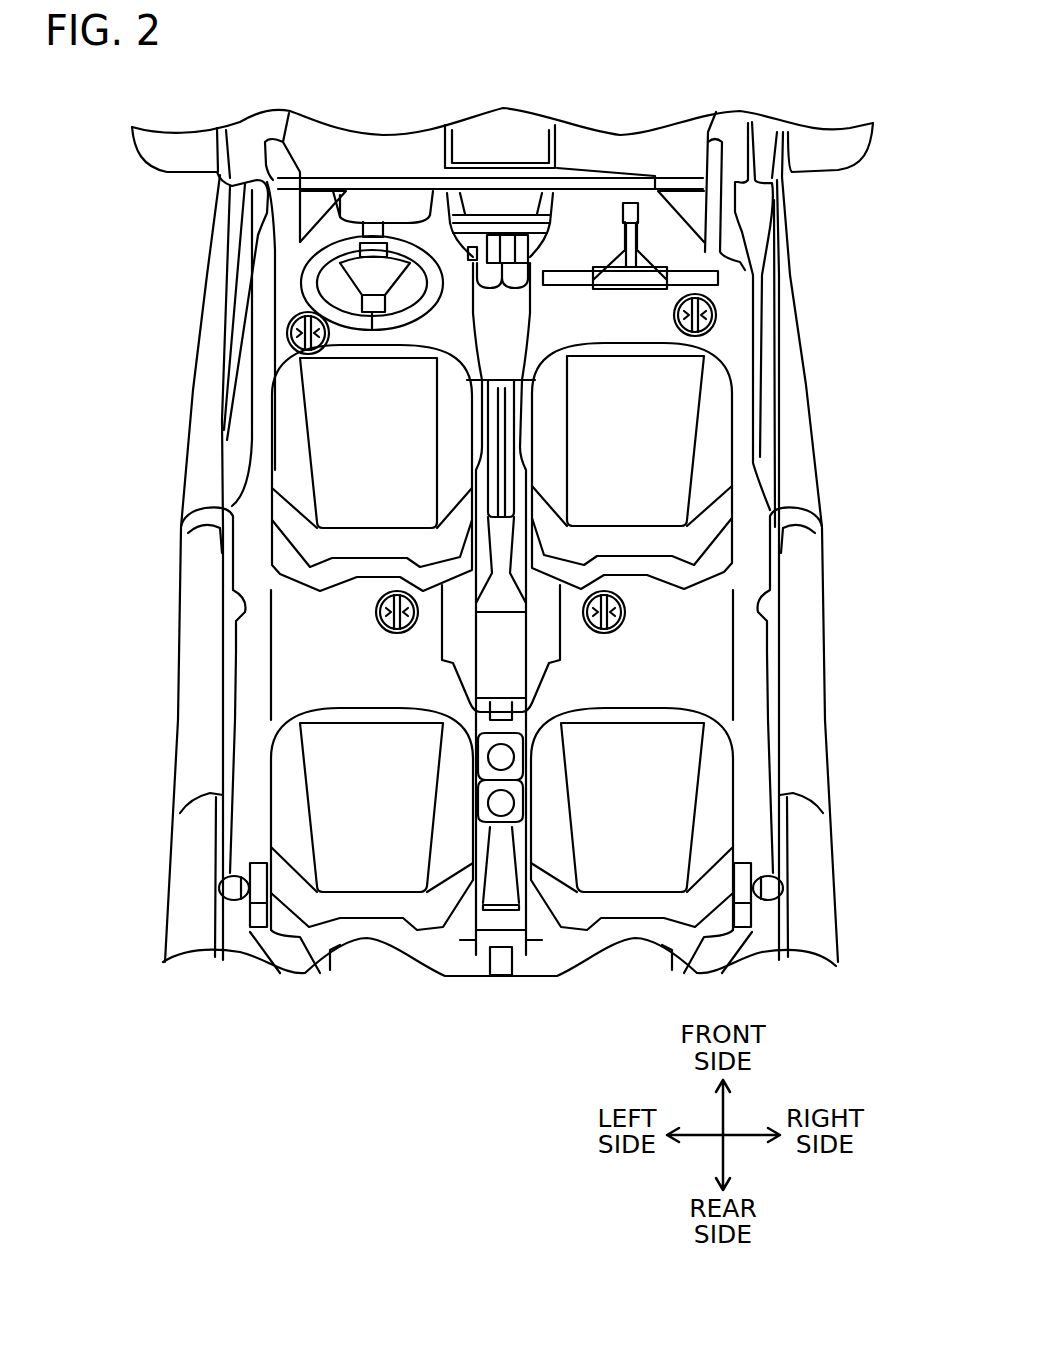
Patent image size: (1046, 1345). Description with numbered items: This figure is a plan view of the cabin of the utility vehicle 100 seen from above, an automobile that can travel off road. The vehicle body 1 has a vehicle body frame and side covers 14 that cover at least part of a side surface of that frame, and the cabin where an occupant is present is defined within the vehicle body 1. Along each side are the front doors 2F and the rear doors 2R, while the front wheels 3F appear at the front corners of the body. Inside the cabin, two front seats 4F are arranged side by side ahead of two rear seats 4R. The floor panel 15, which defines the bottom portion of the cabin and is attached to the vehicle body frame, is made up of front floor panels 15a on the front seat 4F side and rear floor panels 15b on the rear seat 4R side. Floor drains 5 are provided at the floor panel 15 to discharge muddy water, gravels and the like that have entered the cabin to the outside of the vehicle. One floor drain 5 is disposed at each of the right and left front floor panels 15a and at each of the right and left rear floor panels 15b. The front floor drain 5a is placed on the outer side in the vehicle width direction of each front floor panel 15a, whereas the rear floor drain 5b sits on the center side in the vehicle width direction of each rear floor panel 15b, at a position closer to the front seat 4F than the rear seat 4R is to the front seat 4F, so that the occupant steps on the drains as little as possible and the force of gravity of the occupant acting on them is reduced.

The utility vehicle 100 is at (272, 65).
The vehicle body 1 is at (167, 834).
The front wheels 3F is at (152, 177).
The front doors 2F is at (184, 475).
The rear doors 2R is at (178, 628).
The front seats 4F is at (272, 418).
The rear seats 4R is at (270, 775).
The floor drains 5 is at (503, 463).
The front floor drain 5a is at (286, 332).
The rear floor drain 5b is at (375, 608).
The floor panel 15 is at (505, 542).
The front floor panels 15a is at (287, 287).
The rear floor panels 15b is at (323, 680).
The side covers 14 is at (170, 887).